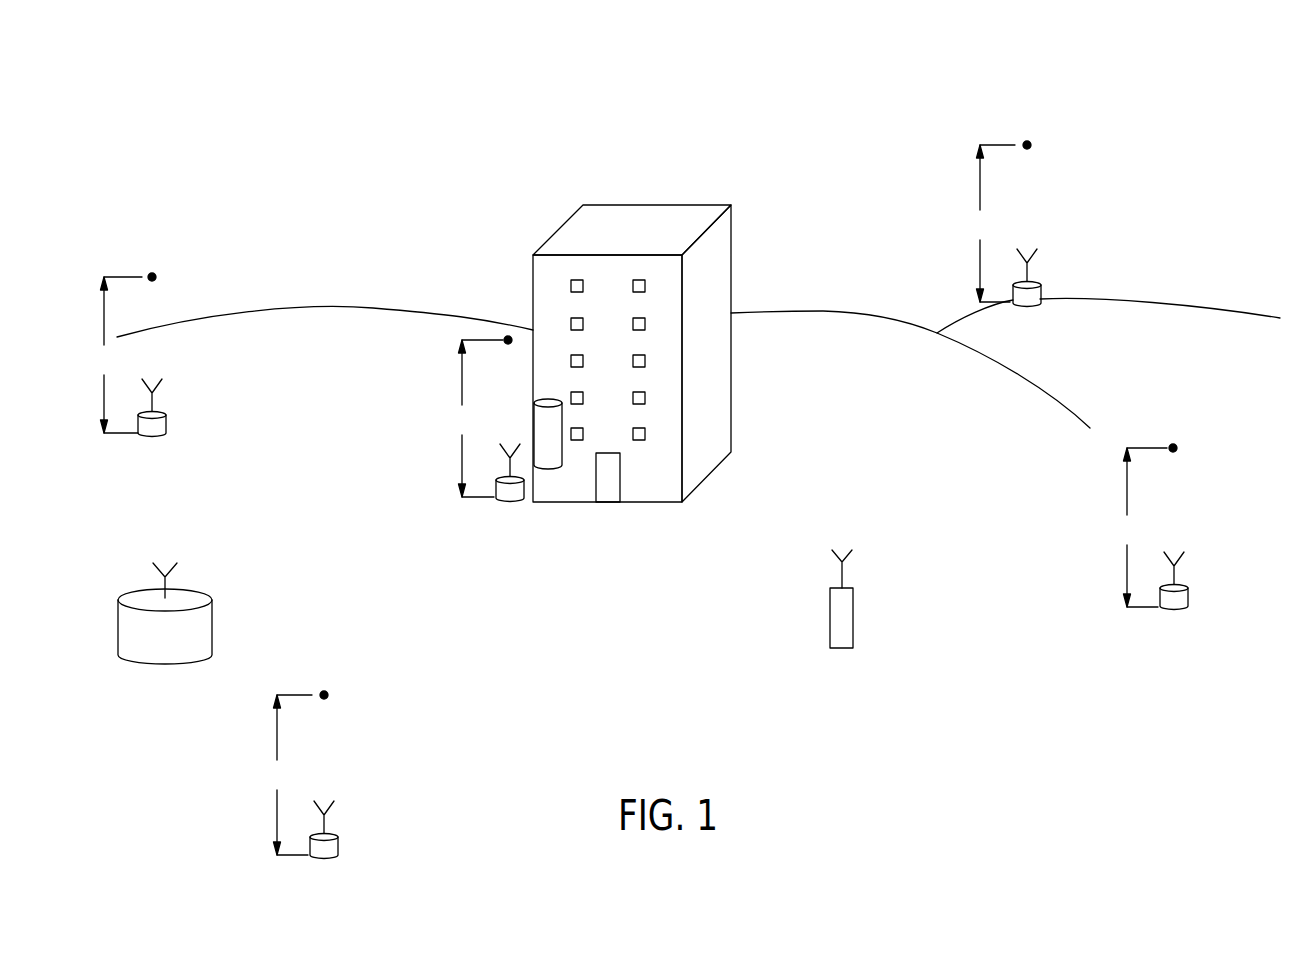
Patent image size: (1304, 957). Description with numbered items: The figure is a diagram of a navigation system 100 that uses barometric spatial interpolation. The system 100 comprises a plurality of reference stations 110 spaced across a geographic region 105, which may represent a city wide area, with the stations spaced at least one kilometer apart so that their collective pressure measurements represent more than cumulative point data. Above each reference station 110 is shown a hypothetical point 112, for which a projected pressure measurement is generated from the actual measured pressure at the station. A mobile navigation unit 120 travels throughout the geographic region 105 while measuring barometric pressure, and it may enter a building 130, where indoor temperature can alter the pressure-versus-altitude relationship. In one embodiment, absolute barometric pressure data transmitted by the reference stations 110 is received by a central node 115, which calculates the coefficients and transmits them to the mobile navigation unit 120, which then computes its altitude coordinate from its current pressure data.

The navigation system 100 is at (478, 119).
The geographic region 105 is at (347, 325).
The reference station 110 is at (168, 424).
The hypothetical point 112 is at (150, 271).
The central node 115 is at (163, 665).
The mobile navigation unit 120 is at (855, 615).
The building 130 is at (723, 252).